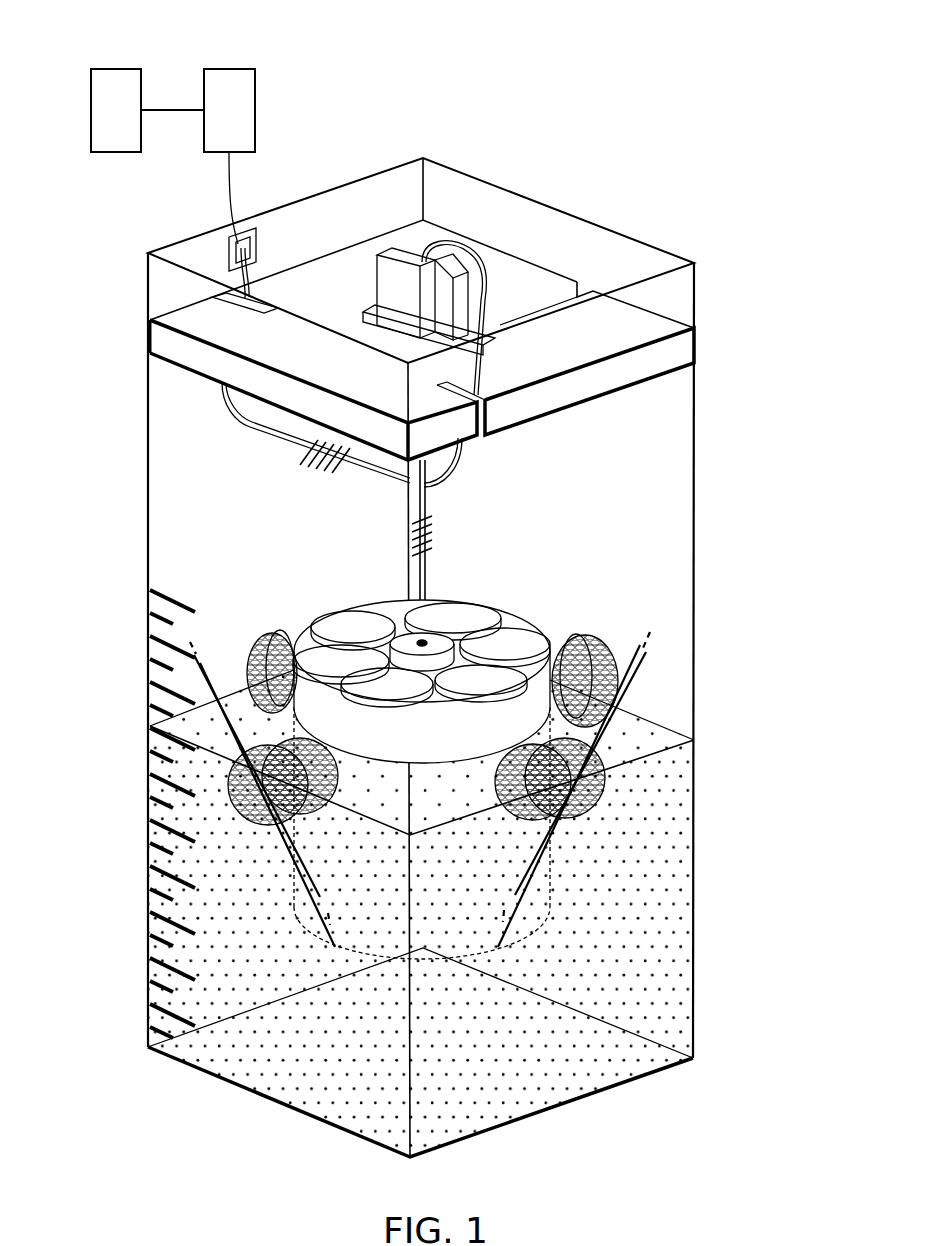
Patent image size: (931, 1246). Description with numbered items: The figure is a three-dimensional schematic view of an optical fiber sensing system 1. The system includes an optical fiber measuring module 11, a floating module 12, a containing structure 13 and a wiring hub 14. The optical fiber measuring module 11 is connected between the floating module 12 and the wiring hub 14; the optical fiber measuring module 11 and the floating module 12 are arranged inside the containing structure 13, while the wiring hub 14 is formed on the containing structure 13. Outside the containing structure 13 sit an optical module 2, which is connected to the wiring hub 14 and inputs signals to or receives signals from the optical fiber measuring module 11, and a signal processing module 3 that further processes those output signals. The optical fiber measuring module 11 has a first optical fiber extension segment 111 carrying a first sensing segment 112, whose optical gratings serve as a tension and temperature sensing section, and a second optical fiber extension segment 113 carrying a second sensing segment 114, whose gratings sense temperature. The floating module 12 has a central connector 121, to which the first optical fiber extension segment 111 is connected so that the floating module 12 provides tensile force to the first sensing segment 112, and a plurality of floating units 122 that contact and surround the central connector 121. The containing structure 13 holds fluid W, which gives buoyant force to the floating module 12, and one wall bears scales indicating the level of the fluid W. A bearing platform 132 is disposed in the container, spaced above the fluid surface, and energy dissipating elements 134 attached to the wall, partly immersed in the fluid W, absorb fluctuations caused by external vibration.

The optical fiber sensing system 1 is at (325, 62).
The optical module 2 is at (233, 85).
The signal processing module 3 is at (105, 88).
The optical fiber measuring module 11 is at (456, 246).
The floating module 12 is at (447, 640).
The containing structure 13 is at (655, 256).
The wiring hub 14 is at (238, 240).
The first optical fiber extension segment 111 is at (425, 300).
The first sensing segment 112 is at (412, 530).
The second optical fiber extension segment 113 is at (357, 470).
The second sensing segment 114 is at (300, 447).
The central connector 121 is at (430, 640).
The floating units 122 is at (507, 648).
The bearing platform 132 is at (665, 357).
The energy dissipating elements 134 is at (272, 645).
The fluid W is at (665, 855).